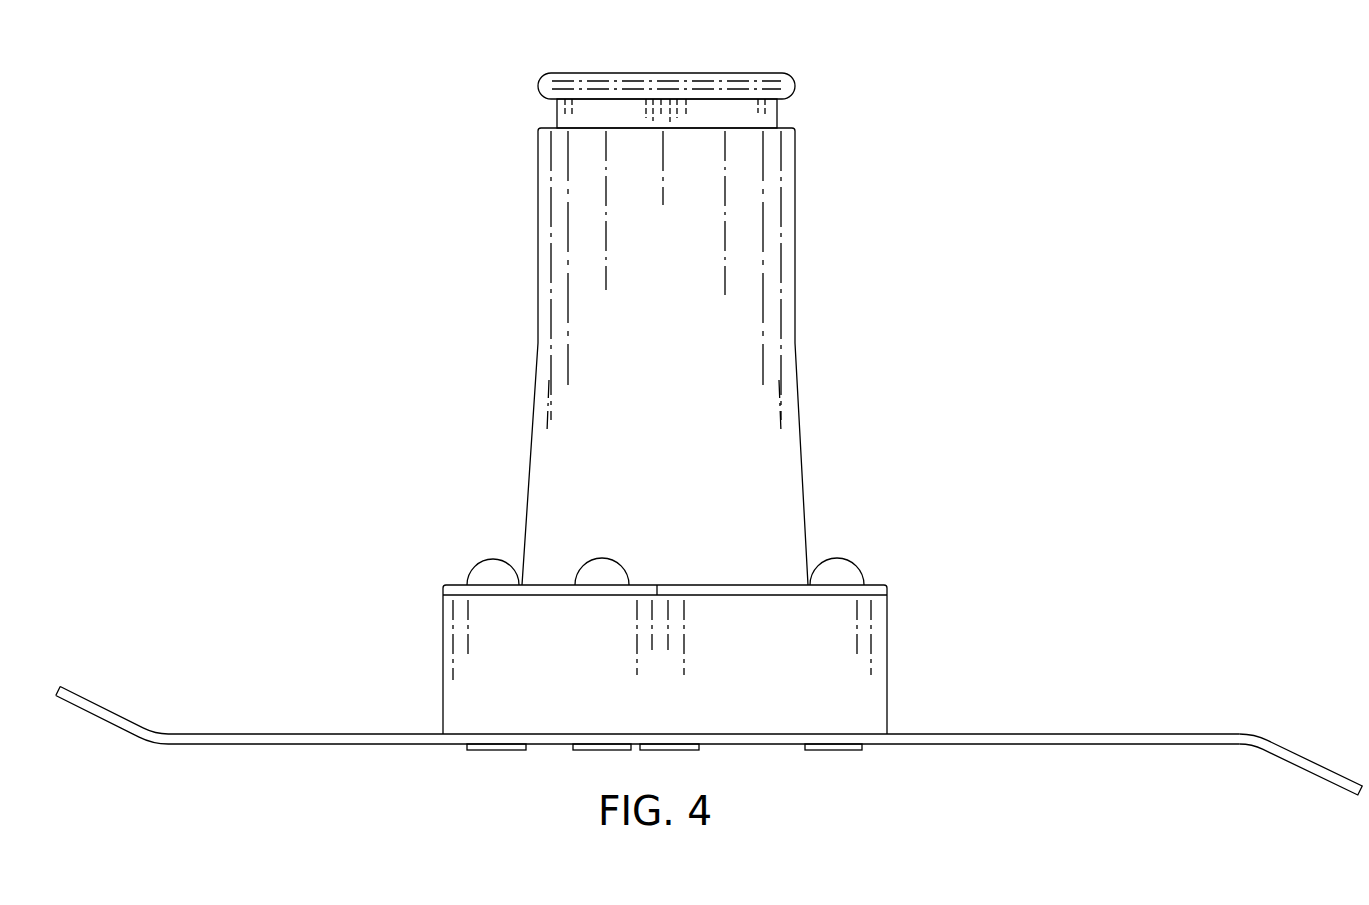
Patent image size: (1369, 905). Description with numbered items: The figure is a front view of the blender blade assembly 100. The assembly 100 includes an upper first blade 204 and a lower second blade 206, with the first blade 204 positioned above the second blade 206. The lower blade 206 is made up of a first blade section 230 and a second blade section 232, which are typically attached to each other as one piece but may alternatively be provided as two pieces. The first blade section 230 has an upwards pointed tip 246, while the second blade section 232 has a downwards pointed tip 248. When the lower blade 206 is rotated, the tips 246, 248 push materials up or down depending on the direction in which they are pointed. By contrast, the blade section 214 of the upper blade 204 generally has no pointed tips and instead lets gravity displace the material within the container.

The blender blade assembly 100 is at (864, 92).
The second blade section 214 is at (643, 600).
The first blade 204 is at (873, 593).
The second blade 206 is at (907, 746).
The first blade section 230 is at (303, 732).
The second blade section 232 is at (1052, 735).
The upwards pointed tip 246 is at (112, 708).
The downwards pointed tip 248 is at (1315, 768).